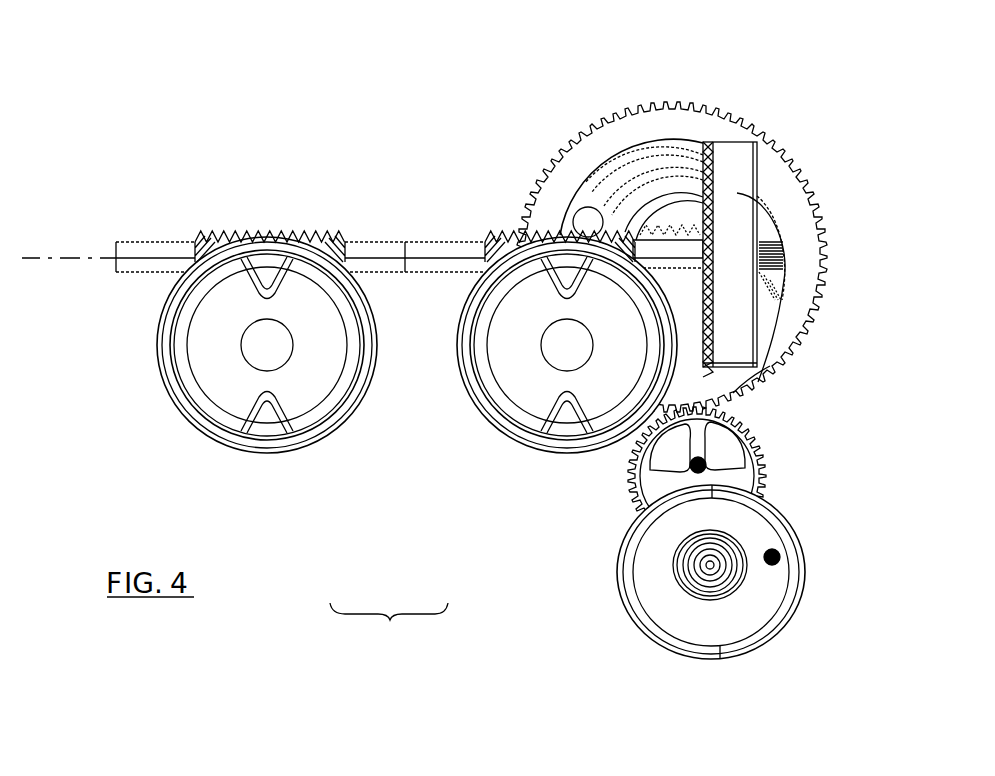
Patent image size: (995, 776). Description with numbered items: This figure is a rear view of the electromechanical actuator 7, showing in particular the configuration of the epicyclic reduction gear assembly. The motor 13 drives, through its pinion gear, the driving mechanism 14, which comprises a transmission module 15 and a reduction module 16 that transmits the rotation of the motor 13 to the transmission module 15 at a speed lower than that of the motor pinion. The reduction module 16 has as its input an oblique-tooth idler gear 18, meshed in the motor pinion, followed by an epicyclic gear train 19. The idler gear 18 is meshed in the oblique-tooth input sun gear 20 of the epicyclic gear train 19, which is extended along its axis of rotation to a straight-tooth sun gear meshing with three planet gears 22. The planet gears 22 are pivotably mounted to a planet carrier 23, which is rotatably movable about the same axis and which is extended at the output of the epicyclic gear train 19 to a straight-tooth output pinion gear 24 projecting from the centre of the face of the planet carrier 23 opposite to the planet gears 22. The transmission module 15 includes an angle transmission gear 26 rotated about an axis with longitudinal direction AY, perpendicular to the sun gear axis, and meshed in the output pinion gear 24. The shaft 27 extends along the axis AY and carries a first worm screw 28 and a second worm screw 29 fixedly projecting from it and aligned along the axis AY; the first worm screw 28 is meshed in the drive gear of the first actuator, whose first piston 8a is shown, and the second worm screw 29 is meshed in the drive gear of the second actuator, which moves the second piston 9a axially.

The drive assembly 7 is at (255, 122).
The shaft 27 is at (150, 240).
The second worm screw 29 is at (330, 237).
The first worm screw 28 is at (490, 230).
The second piston 9a is at (217, 400).
The first piston 8a is at (522, 415).
The planet gears 22 is at (548, 195).
The output pinion gear 24 is at (665, 235).
The epicyclic gear train 19 is at (798, 142).
The angle transmission gear 26 is at (740, 193).
The planet carrier 23 is at (765, 303).
The input sun gear 20 is at (767, 360).
The idler gear 18 is at (633, 493).
The motor 13 is at (765, 608).
The transmission module 15 is at (405, 413).
The reduction module 16 is at (530, 506).
The driving mechanism 14 is at (389, 632).
The axis AY is at (60, 262).